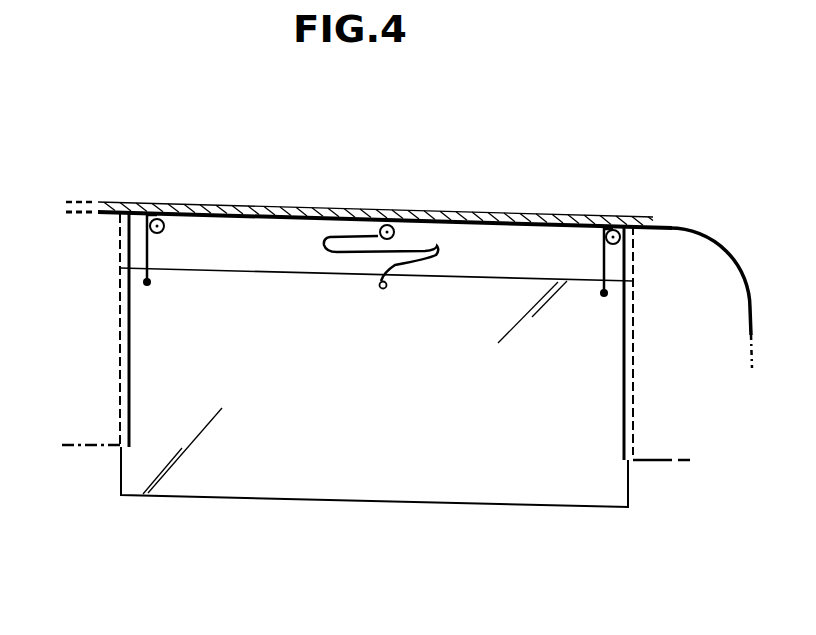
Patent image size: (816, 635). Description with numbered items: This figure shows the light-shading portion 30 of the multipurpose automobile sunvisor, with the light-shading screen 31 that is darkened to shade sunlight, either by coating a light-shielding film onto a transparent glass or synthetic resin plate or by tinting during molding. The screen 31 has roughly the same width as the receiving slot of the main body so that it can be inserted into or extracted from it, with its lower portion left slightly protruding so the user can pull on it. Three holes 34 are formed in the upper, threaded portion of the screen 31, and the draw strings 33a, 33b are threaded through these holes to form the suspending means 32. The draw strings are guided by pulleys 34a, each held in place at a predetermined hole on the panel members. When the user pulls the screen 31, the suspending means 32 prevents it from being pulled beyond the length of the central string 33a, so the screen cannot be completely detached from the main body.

The light-shading portion 30 is at (315, 510).
The light-shading screen 31 is at (408, 438).
The suspending means 32 is at (312, 236).
The central string 33a is at (438, 245).
The draw strings 33b is at (163, 240).
The holes 34 is at (143, 283).
The pulleys 34a is at (142, 203).